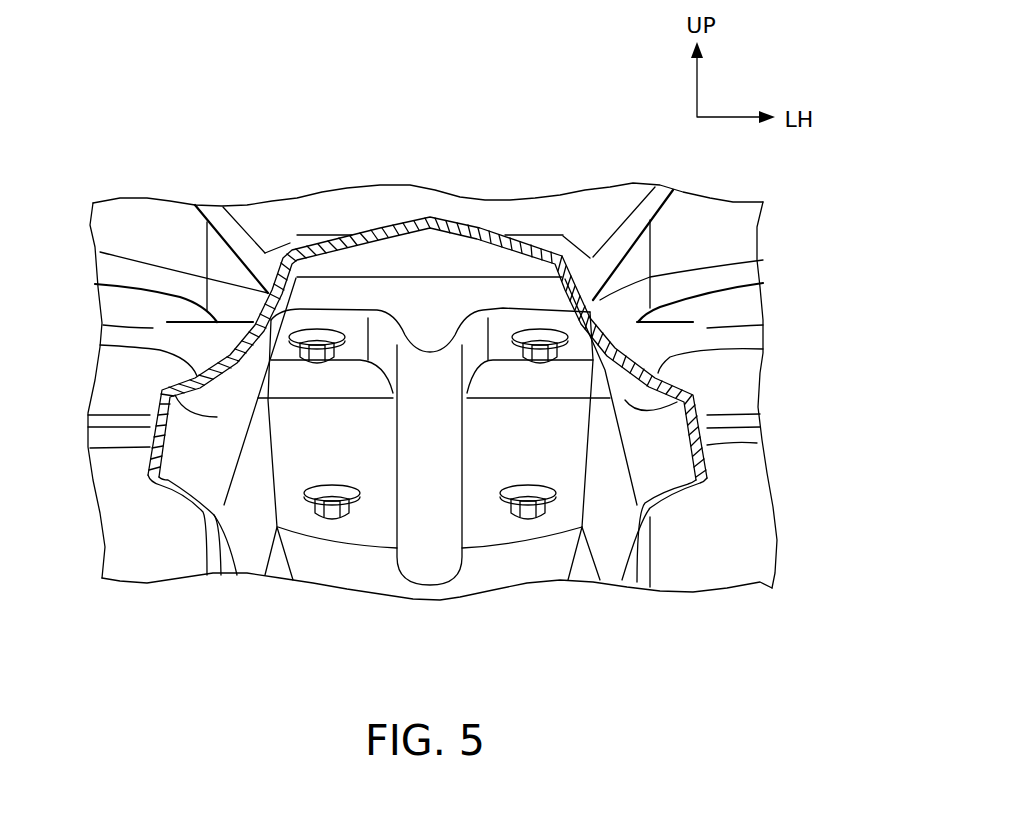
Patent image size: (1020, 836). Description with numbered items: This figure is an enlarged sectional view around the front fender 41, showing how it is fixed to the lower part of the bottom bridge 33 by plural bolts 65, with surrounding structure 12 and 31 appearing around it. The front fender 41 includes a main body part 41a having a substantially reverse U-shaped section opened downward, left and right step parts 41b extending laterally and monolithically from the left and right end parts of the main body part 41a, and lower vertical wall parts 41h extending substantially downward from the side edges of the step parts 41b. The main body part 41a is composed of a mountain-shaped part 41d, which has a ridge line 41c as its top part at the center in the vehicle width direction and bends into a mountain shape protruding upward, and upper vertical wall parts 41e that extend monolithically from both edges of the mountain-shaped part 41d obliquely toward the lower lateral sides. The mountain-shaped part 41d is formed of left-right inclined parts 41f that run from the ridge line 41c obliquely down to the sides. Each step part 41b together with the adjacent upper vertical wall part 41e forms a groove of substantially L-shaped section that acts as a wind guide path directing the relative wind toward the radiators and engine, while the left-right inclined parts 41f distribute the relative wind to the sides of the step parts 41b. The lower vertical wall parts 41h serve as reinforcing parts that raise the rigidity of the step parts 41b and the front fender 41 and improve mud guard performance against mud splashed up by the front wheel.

The front side member 12 is at (133, 215).
The lower panel 31 is at (757, 533).
The bottom bridge 33 is at (110, 372).
The front fender 41 is at (293, 250).
The main body part 41a is at (492, 222).
The step part 41b is at (763, 349).
The ridge line 41c is at (432, 217).
The mountain-shaped part 41d is at (388, 215).
The upper vertical wall part 41e is at (763, 260).
The left-right inclined part 41f is at (523, 237).
The lower vertical wall part 41h is at (757, 443).
The bolt 65 is at (301, 346).